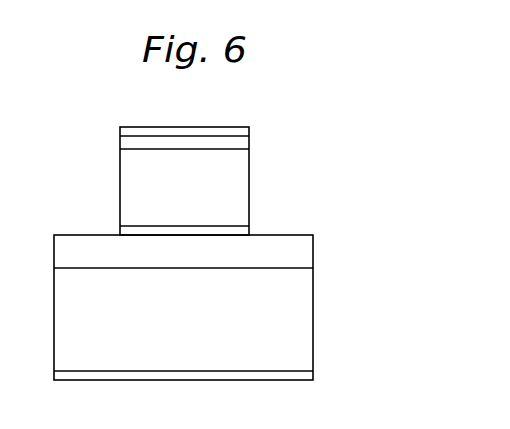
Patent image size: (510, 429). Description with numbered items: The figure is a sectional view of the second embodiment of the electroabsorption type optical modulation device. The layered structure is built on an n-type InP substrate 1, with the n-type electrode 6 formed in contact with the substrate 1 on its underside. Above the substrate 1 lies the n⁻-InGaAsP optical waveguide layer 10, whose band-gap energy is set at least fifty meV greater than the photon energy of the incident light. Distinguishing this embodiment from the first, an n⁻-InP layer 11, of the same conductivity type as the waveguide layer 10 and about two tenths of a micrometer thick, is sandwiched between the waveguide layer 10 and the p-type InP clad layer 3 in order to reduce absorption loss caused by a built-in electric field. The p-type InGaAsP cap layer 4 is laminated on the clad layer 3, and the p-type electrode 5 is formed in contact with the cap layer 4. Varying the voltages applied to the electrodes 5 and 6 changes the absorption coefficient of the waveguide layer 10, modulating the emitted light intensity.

The n-type InP substrate 1 is at (313, 322).
The n⁻-InGaAsP optical waveguide layer 10 is at (313, 255).
The n-type electrode 6 is at (313, 377).
The p-type InP clad layer 3 is at (249, 190).
The p-type InGaAsP cap layer 4 is at (249, 148).
The p-type electrode 5 is at (249, 134).
The n⁻-InP layer 11 is at (249, 230).